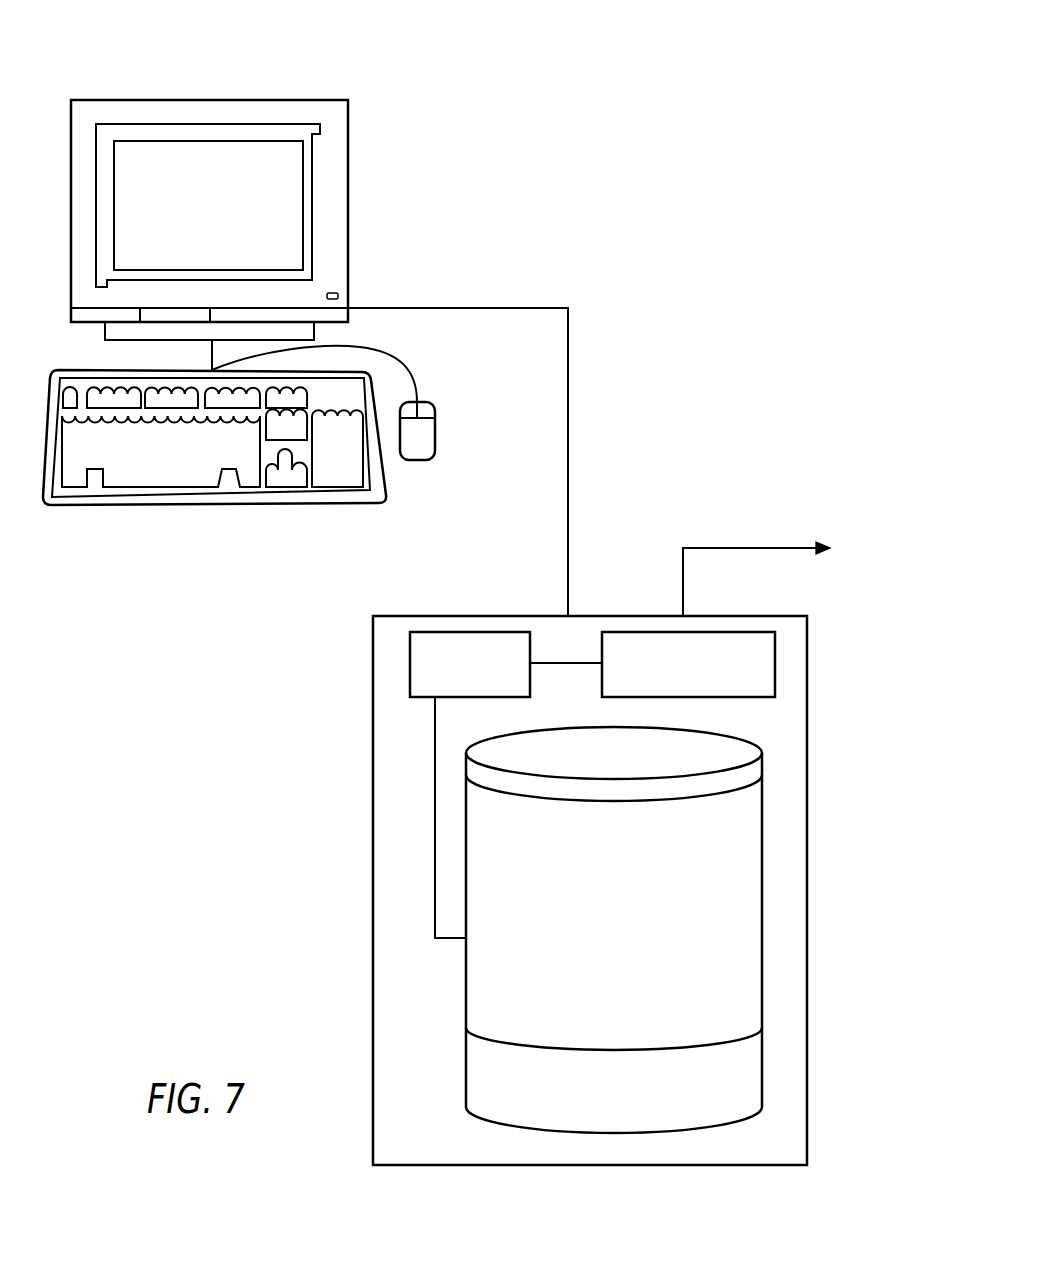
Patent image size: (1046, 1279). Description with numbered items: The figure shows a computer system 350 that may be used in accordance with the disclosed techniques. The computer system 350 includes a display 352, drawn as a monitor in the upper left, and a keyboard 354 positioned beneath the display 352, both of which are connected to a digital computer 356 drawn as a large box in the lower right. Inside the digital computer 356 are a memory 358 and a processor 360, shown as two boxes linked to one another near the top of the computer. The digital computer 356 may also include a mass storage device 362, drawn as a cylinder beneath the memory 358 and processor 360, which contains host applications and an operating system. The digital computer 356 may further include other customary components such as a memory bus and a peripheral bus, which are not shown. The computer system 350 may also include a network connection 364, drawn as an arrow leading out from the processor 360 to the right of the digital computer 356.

The computer system 350 is at (590, 82).
The display 352 is at (348, 197).
The keyboard 354 is at (190, 505).
The digital computer 356 is at (373, 937).
The memory 358 is at (440, 632).
The processor 360 is at (740, 632).
The mass storage device 362 is at (722, 871).
The network connection 364 is at (740, 548).